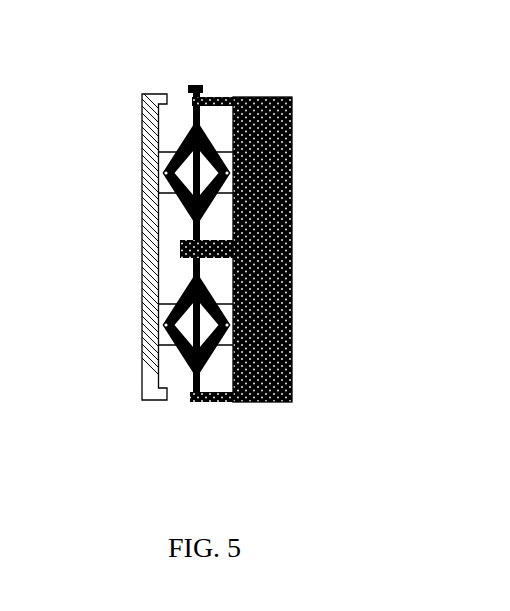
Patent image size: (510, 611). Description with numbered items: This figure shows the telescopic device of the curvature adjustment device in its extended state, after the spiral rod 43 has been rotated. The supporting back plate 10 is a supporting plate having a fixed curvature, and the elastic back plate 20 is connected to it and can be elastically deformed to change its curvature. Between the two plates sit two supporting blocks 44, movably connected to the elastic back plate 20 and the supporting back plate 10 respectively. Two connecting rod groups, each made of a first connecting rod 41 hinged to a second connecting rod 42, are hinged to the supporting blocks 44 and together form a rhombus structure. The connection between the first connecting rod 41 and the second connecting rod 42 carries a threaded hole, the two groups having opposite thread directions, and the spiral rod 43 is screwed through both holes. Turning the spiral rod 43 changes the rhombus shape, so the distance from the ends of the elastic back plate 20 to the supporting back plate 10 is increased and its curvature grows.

The supporting back plate 10 is at (292, 228).
The elastic back plate 20 is at (143, 234).
The first connecting rod 41 is at (205, 355).
The second connecting rod 42 is at (182, 348).
The spiral rod 43 is at (200, 85).
The supporting block 44 is at (160, 156).